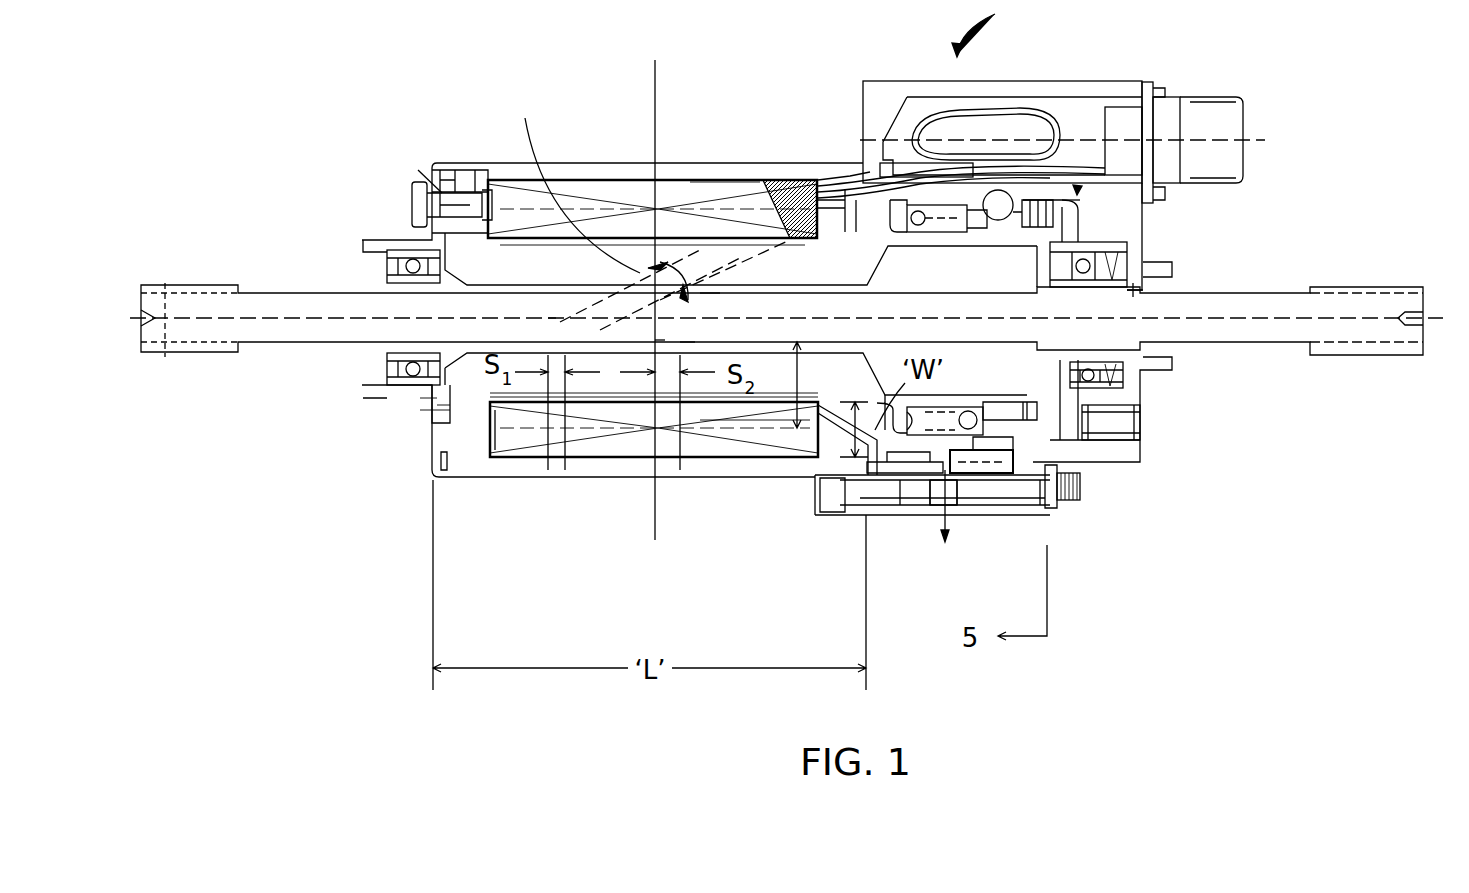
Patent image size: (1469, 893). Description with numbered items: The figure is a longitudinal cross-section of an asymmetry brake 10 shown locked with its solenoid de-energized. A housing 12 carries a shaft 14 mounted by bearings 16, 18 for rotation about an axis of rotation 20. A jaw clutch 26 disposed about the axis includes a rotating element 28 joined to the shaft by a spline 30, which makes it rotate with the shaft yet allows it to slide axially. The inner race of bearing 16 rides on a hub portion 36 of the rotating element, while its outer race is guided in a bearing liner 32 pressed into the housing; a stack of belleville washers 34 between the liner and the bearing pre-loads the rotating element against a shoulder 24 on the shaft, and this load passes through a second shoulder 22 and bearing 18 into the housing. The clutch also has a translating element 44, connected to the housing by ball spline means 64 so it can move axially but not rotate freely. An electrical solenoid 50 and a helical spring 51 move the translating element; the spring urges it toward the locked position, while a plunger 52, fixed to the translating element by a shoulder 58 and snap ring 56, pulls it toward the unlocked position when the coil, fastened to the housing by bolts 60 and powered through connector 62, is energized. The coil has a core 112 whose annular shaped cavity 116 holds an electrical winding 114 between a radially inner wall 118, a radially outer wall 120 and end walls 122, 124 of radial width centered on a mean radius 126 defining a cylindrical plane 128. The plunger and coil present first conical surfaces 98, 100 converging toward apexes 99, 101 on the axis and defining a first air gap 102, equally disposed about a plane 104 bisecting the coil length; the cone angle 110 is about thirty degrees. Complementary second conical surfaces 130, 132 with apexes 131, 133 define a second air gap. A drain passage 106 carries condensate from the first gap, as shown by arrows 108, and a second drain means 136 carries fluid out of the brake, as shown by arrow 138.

The asymmetry brake 10 is at (989, 28).
The housing 12 is at (1103, 78).
The shaft 14 is at (1412, 287).
The bearing 16 is at (1122, 266).
The bearing 18 is at (395, 250).
The axis of rotation 20 is at (1357, 318).
The second shoulder 22 is at (396, 430).
The shoulder 24 is at (1045, 355).
The jaw clutch 26 is at (1077, 193).
The rotating element 28 is at (1078, 497).
The spline 30 is at (1100, 440).
The bearing liner 32 is at (1130, 252).
The belleville washers 34 is at (1112, 372).
The hub portion 36 is at (1133, 287).
The translating element 44 is at (1027, 405).
The electrical solenoid 50 is at (632, 163).
The helical spring 51 is at (945, 237).
The plunger 52 is at (672, 180).
The snap ring 56 is at (1090, 212).
The shoulder 58 is at (977, 190).
The bolts 60 is at (1065, 512).
The connector 62 is at (1243, 135).
The ball spline means 64 is at (1003, 191).
The first conical surface 98 is at (668, 263).
The apex 99 is at (565, 320).
The first conical surface 100 is at (560, 179).
The apex 101 is at (550, 320).
The first air gap 102 is at (630, 403).
The plane 104 is at (660, 60).
The drain passage 106 is at (515, 402).
The arrows 108 is at (578, 395).
The cone angle 110 is at (705, 293).
The core 112 is at (500, 163).
The electrical winding 114 is at (797, 188).
The annular shaped cavity 116 is at (790, 178).
The radially inner wall 118 is at (537, 238).
The radially outer wall 120 is at (730, 180).
The end wall 122 is at (412, 222).
The end wall 124 is at (848, 448).
The mean radius 126 is at (800, 372).
The cylindrical plane 128 is at (760, 432).
The second conical surface 130 is at (868, 222).
The apex 131 is at (683, 324).
The second conical surface 132 is at (847, 220).
The apex 133 is at (659, 342).
The second drain means 136 is at (940, 512).
The arrow 138 is at (978, 512).